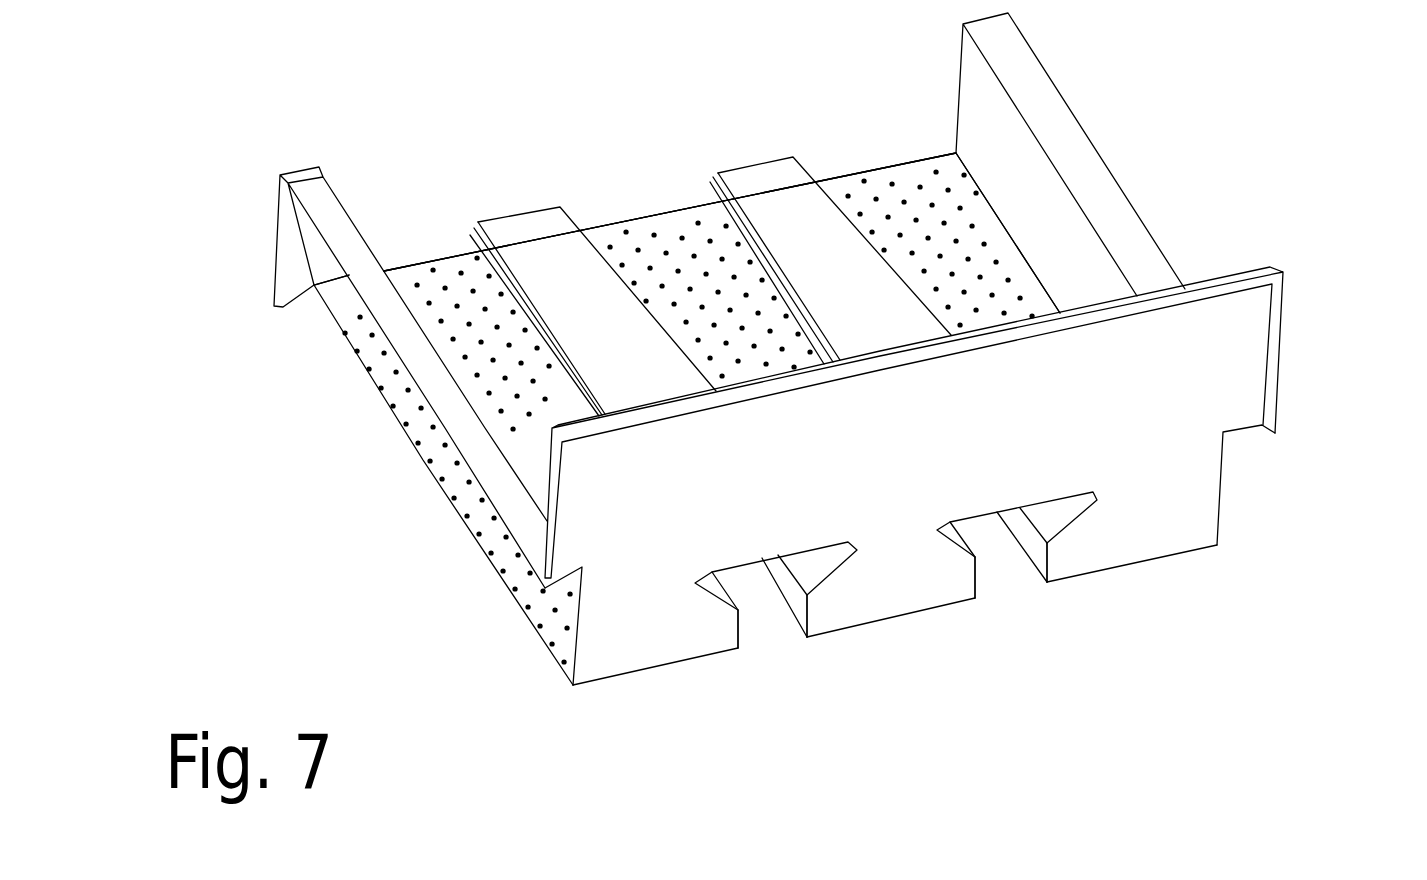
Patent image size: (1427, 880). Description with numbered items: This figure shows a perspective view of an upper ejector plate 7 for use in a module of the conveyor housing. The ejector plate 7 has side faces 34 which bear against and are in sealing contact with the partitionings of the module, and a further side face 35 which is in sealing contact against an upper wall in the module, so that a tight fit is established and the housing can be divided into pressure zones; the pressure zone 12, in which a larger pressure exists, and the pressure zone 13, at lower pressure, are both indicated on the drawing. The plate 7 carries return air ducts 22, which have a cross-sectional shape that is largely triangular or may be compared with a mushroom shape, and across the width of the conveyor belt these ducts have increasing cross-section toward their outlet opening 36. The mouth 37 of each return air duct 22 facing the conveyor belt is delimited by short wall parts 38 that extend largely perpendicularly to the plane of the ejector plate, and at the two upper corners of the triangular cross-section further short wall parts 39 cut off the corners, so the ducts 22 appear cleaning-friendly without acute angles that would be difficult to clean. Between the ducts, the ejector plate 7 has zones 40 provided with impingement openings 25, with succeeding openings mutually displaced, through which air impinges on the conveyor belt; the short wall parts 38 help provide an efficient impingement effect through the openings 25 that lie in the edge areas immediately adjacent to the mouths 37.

The upper ejector plate 7 is at (312, 469).
The pressure zone 12 is at (638, 165).
The pressure zone 13 is at (811, 771).
The return air duct 22 is at (537, 227).
The impingement opening 25 is at (640, 250).
The side face 34 is at (1073, 110).
The side face 35 is at (1230, 285).
The outlet opening 36 is at (761, 665).
The mouth 37 is at (780, 652).
The short wall part 38 is at (977, 577).
The short wall part 39 is at (473, 235).
The zone 40 is at (417, 278).